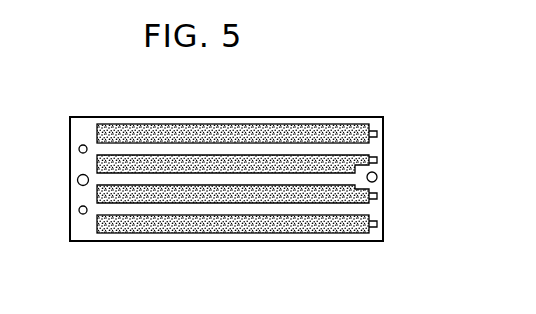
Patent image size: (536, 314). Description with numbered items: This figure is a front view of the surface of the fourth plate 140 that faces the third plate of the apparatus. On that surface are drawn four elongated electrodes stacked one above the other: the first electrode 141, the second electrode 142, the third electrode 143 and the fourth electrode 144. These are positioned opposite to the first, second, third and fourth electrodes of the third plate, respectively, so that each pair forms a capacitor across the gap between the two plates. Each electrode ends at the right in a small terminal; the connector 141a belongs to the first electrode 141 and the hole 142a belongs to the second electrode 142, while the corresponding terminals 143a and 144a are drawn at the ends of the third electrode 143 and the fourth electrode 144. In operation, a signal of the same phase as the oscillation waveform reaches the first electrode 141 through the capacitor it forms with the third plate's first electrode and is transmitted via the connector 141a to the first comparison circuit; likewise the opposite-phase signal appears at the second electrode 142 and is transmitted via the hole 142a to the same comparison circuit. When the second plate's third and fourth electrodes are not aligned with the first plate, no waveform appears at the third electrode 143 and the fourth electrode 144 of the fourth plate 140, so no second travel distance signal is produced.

The fourth plate 140 is at (84, 122).
The first electrode 141 is at (125, 125).
The second electrode 142 is at (97, 160).
The third electrode 143 is at (97, 197).
The fourth electrode 144 is at (97, 227).
The connector 141a is at (378, 134).
The hole 142a is at (378, 160).
The terminal of third strip 143a is at (378, 196).
The terminal of fourth strip 144a is at (378, 224).